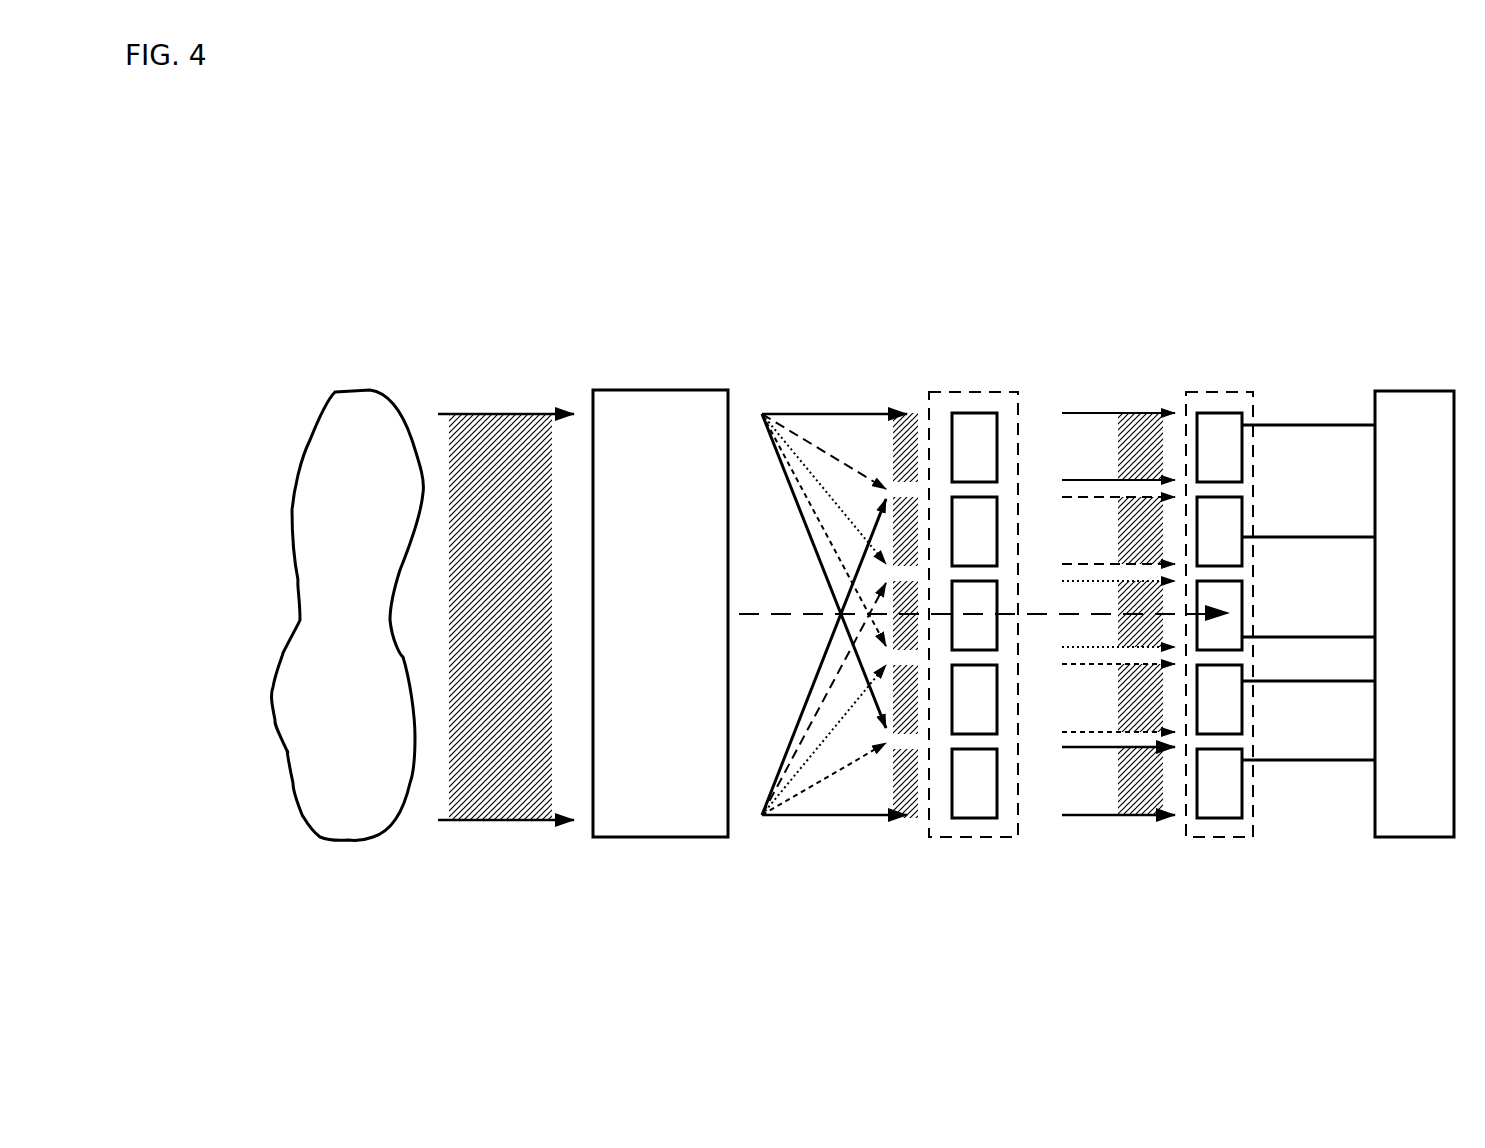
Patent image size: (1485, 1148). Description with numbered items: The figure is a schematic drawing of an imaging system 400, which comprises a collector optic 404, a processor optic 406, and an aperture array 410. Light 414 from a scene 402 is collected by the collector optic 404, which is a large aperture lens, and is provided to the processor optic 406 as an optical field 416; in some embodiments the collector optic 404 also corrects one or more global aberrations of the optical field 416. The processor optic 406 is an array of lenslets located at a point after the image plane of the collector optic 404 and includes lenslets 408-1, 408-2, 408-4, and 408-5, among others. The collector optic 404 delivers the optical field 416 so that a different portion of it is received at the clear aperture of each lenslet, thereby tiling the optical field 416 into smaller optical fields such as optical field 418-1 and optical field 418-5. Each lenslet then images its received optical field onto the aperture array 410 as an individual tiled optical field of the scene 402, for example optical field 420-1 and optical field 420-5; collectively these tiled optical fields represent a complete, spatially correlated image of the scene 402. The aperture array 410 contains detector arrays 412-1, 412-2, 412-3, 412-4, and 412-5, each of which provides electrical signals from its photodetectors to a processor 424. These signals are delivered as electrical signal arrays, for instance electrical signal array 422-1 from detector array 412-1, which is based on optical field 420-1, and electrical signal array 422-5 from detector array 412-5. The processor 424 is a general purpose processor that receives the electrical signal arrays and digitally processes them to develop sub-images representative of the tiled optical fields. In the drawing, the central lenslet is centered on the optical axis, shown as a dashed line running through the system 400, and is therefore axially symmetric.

The imaging system 400 is at (348, 172).
The scene 402 is at (372, 391).
The collector optic 404 is at (660, 390).
The processor optic 406 is at (975, 392).
The lenslet 408-1 is at (985, 435).
The lenslet 408-2 is at (985, 547).
The lenslet 408-4 is at (985, 682).
The lenslet 408-5 is at (985, 803).
The aperture array 410 is at (1218, 392).
The detector array 412-1 is at (1243, 435).
The detector array 412-2 is at (1243, 547).
The detector array 412-3 is at (1243, 625).
The detector array 412-4 is at (1243, 720).
The detector array 412-5 is at (1243, 770).
The light 414 is at (460, 862).
The optical field 416 is at (795, 860).
The optical field 418-1 is at (905, 415).
The optical field 418-5 is at (908, 795).
The optical field 420-1 is at (1130, 420).
The optical field 420-5 is at (1130, 816).
The electrical signal array 422-1 is at (1295, 425).
The electrical signal array 422-5 is at (1353, 762).
The processor 424 is at (812, 614).